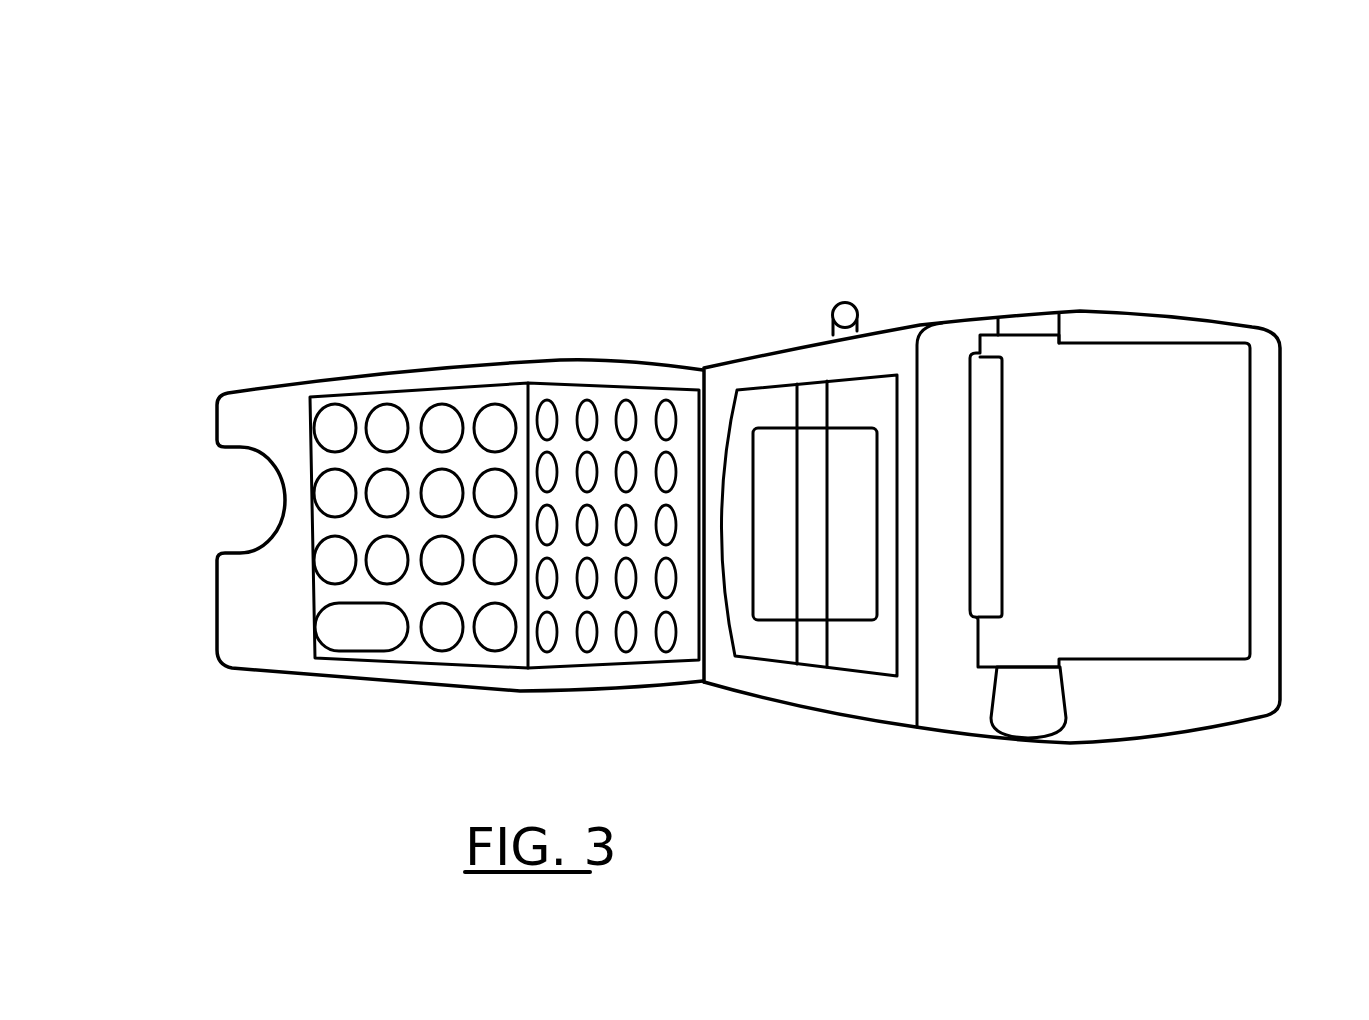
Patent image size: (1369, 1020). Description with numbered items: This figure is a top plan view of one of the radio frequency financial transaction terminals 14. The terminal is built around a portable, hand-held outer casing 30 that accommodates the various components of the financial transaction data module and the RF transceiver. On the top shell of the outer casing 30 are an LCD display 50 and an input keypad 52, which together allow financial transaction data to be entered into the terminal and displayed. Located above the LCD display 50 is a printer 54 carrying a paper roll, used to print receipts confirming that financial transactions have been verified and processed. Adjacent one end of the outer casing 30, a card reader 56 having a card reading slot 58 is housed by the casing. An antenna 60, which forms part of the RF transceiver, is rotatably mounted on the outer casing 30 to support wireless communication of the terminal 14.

The RF financial transaction terminal 14 is at (750, 451).
The outer casing 30 is at (992, 526).
The LCD display 50 is at (770, 443).
The input keypad 52 is at (478, 406).
The printer 54 is at (1030, 360).
The card reader 56 is at (417, 529).
The card reading slot 58 is at (248, 501).
The antenna 60 is at (845, 310).